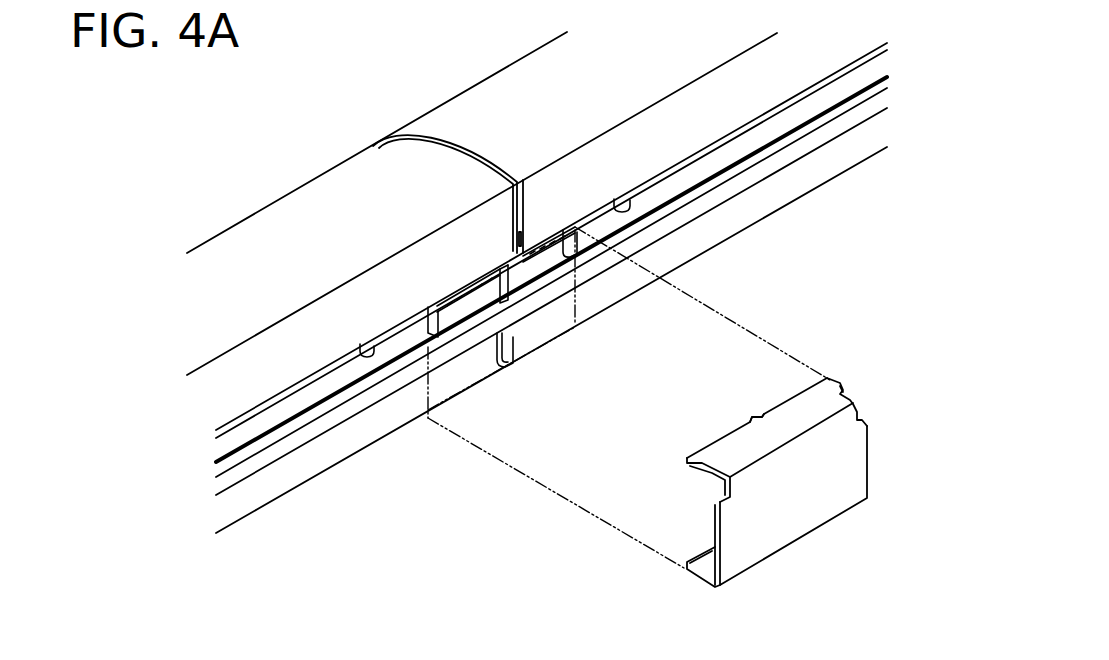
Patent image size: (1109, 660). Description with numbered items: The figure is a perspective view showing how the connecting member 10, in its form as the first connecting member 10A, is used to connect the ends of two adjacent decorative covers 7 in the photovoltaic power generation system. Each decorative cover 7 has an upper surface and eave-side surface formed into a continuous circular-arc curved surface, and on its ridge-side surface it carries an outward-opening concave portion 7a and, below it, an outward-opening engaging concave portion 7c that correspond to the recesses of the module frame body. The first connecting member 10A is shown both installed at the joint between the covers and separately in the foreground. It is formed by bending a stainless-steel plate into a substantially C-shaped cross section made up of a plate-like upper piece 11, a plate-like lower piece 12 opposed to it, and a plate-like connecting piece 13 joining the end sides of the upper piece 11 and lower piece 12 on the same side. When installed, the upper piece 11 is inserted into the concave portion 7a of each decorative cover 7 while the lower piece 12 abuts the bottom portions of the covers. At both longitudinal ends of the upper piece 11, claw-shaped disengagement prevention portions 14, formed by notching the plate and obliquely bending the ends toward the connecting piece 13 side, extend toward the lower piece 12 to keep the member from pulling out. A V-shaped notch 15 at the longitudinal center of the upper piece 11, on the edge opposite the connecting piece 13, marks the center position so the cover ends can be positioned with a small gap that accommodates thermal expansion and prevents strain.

The decorative cover 7 is at (298, 186).
The concave portion 7a is at (367, 352).
The engaging concave portion 7c is at (347, 412).
The connecting member 10 is at (786, 493).
The first connecting member 10A is at (578, 302).
The upper piece 11 is at (731, 440).
The lower piece 12 is at (701, 571).
The connecting piece 13 is at (468, 363).
The disengagement prevention portion 14 is at (702, 468).
The notch 15 is at (756, 417).